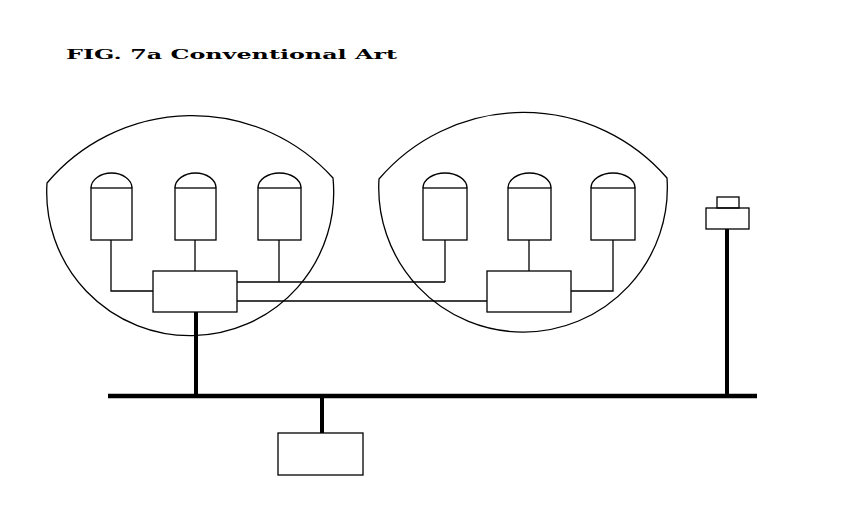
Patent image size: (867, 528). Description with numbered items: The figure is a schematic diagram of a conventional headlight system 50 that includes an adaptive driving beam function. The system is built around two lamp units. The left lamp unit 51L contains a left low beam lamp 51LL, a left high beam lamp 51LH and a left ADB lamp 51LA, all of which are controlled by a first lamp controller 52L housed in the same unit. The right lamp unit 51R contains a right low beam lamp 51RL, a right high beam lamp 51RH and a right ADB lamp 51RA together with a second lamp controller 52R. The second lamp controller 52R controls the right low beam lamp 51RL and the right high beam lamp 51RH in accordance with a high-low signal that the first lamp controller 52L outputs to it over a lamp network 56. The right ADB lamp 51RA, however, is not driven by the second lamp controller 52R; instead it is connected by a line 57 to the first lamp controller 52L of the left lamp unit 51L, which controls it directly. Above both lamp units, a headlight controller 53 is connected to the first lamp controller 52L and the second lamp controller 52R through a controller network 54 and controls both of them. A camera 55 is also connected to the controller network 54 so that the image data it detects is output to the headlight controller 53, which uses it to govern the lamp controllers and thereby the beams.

The conventional headlight system 50 is at (573, 80).
The left lamp unit 51L is at (95, 297).
The right lamp unit 51R is at (615, 300).
The left low beam lamp 51LL is at (113, 182).
The left high beam lamp 51LH is at (197, 182).
The left ADB lamp 51LA is at (281, 182).
The right ADB lamp 51RA is at (445, 182).
The right high beam lamp 51RH is at (530, 182).
The right low beam lamp 51RL is at (612, 182).
The first lamp controller 52L is at (217, 302).
The second lamp controller 52R is at (548, 305).
The headlight controller 53 is at (353, 453).
The controller network 54 is at (525, 402).
The camera 55 is at (727, 197).
The lamp network 56 is at (343, 305).
The line 57 is at (360, 280).